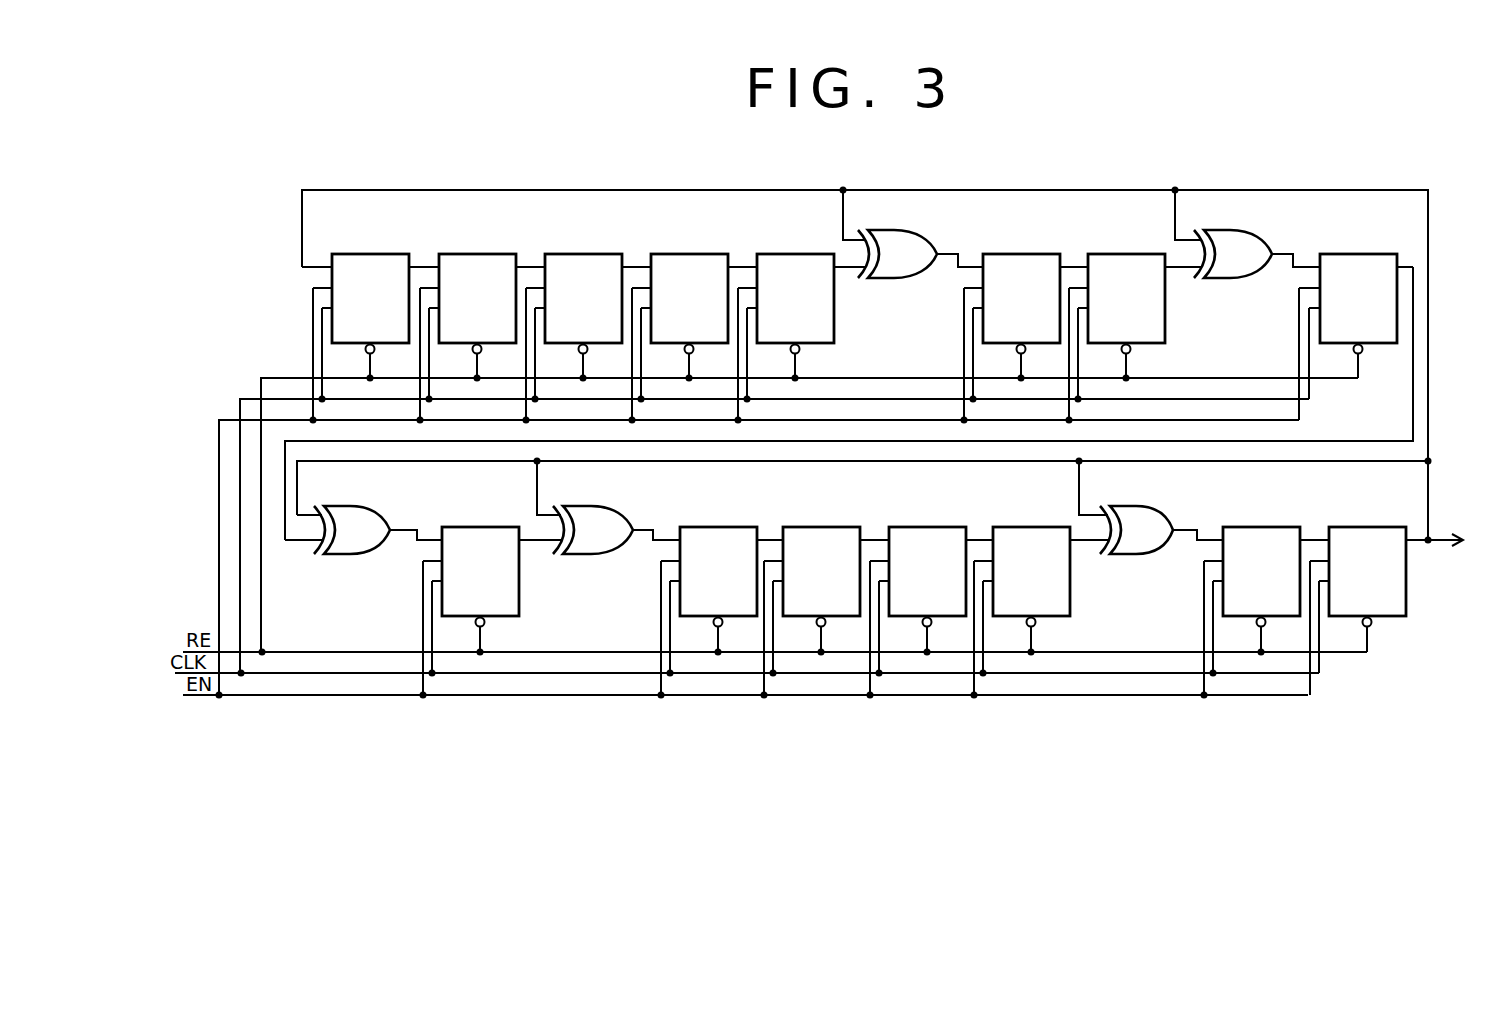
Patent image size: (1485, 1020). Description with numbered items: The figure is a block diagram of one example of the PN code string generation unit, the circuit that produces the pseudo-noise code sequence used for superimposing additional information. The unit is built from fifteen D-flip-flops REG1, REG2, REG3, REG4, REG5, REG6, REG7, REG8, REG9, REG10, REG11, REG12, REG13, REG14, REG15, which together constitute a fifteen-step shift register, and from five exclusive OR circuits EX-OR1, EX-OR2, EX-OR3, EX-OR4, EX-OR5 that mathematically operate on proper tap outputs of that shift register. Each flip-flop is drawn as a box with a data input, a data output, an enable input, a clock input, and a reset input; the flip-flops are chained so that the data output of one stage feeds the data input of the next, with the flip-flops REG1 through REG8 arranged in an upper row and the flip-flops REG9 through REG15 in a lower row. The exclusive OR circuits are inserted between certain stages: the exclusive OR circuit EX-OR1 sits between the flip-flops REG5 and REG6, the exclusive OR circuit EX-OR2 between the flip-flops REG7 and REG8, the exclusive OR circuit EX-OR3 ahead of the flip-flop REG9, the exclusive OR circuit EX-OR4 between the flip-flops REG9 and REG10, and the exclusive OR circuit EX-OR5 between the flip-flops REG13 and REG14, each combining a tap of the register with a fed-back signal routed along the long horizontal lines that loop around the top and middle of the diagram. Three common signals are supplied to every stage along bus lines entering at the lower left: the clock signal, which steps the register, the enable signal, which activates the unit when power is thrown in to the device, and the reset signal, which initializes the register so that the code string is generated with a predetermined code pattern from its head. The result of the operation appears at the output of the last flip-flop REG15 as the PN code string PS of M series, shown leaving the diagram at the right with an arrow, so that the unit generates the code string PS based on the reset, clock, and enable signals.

The D-flip-flop REG1 is at (375, 253).
The D-flip-flop REG2 is at (493, 253).
The D-flip-flop REG3 is at (589, 253).
The D-flip-flop REG4 is at (708, 253).
The D-flip-flop REG5 is at (834, 319).
The D-flip-flop REG6 is at (1033, 253).
The D-flip-flop REG7 is at (1165, 319).
The D-flip-flop REG8 is at (1334, 253).
The D-flip-flop REG9 is at (519, 598).
The D-flip-flop REG10 is at (710, 527).
The D-flip-flop REG11 is at (814, 527).
The D-flip-flop REG12 is at (916, 527).
The D-flip-flop REG13 is at (1070, 596).
The D-flip-flop REG14 is at (1255, 527).
The D-flip-flop REG15 is at (1395, 617).
The exclusive OR circuit EX-OR1 is at (890, 232).
The exclusive OR circuit EX-OR2 is at (1221, 230).
The exclusive OR circuit EX-OR3 is at (346, 507).
The exclusive OR circuit EX-OR4 is at (586, 506).
The exclusive OR circuit EX-OR5 is at (1133, 505).
The PN code string PS is at (1435, 521).